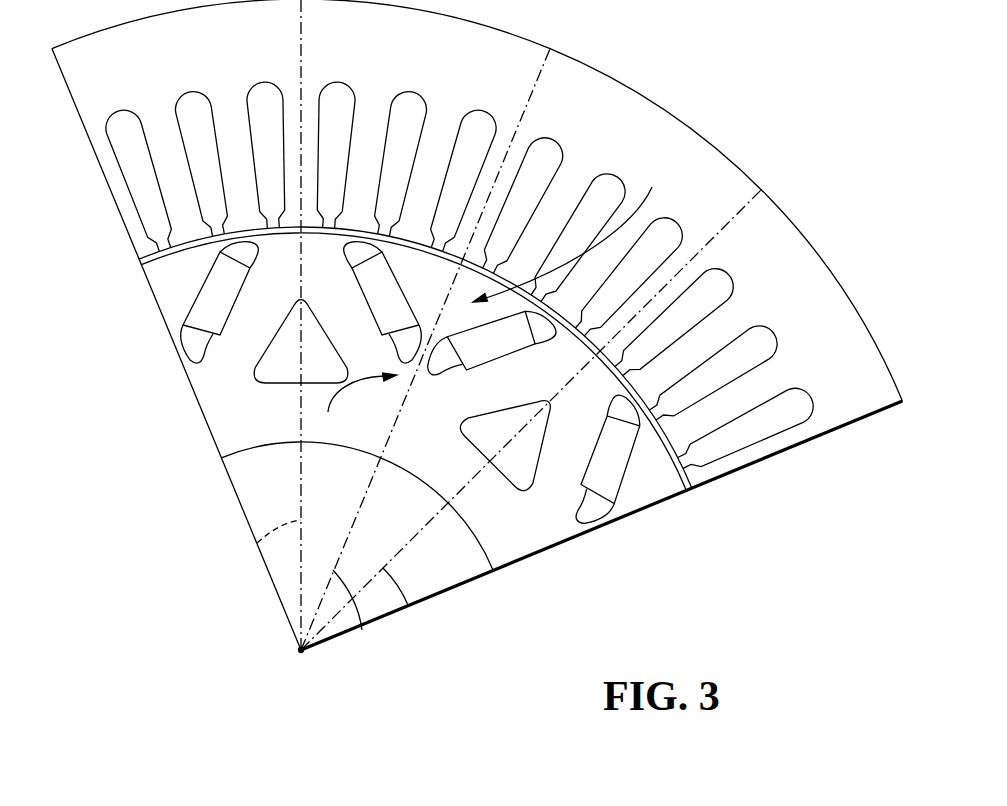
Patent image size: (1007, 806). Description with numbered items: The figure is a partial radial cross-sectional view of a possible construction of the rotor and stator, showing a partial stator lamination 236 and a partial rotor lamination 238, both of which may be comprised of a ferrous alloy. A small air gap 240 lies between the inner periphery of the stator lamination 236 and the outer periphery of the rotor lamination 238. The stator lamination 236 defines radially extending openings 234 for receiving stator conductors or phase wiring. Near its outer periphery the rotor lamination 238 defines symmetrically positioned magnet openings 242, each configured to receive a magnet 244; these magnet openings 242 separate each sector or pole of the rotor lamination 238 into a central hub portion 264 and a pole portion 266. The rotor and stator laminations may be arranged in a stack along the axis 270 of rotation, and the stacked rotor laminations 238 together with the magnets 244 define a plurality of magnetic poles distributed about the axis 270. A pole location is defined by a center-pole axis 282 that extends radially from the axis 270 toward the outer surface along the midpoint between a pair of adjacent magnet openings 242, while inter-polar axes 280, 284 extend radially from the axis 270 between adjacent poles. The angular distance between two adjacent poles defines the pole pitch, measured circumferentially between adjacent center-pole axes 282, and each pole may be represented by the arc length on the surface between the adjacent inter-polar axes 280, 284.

The radially extending openings 234 is at (258, 178).
The stator lamination 236 is at (835, 241).
The rotor lamination 238 is at (508, 550).
The air gap 240 is at (145, 265).
The magnet openings 242 is at (373, 303).
The magnet 244 is at (212, 292).
The central hub portion 264 is at (354, 409).
The pole portion 266 is at (571, 231).
The axis of rotation 270 is at (297, 651).
The inter-polar axis 280 is at (408, 606).
The center-pole axis 282 is at (362, 630).
The inter-polar axis 284 is at (257, 543).